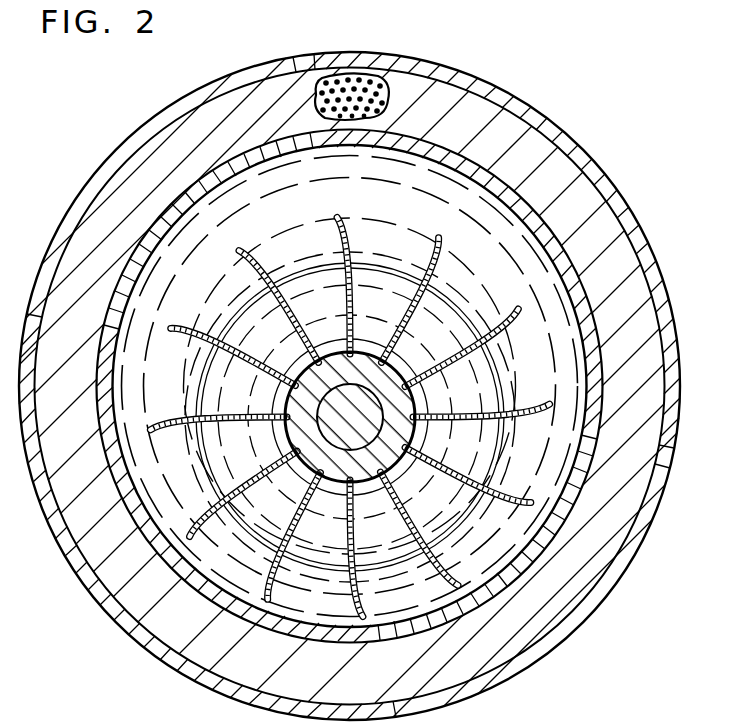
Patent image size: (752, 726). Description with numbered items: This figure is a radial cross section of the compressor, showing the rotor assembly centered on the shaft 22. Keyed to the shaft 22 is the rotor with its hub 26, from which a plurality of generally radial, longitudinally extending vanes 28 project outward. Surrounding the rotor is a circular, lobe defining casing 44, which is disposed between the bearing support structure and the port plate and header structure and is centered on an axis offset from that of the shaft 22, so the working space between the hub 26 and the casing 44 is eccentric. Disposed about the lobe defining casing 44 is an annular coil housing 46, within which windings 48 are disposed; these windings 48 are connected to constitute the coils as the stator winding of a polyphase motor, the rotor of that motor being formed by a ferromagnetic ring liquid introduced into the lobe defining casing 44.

The shaft 22 is at (378, 351).
The hub 26 is at (412, 361).
The vanes 28 is at (347, 277).
The lobe defining casing 44 is at (519, 207).
The annular coil housing 46 is at (457, 78).
The windings 48 is at (388, 92).